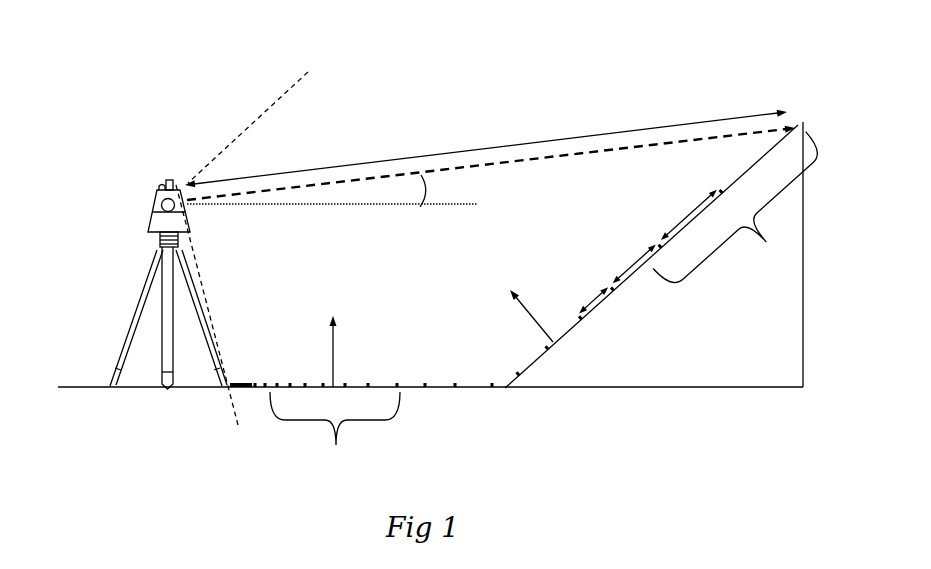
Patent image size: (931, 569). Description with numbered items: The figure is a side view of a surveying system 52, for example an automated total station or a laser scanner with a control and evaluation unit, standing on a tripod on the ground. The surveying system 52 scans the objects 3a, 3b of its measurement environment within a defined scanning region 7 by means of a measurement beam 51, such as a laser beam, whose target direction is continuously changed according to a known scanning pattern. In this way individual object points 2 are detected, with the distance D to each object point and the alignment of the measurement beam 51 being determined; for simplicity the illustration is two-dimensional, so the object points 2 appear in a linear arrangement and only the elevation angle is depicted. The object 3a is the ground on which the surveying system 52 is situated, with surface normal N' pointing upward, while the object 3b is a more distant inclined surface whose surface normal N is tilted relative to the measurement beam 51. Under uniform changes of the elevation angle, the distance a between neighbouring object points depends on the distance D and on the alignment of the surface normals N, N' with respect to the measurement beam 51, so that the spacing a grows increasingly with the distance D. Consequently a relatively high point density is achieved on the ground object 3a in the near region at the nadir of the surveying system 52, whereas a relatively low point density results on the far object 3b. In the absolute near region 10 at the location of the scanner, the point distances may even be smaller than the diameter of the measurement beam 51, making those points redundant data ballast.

The surveying system 52 is at (158, 162).
The scanning region 7 is at (346, 114).
The distance D is at (517, 142).
The measurement beam 51 is at (452, 170).
The surface normal N is at (515, 295).
The distance between object points a is at (697, 212).
The surface normal N' is at (297, 345).
The object points 2 is at (369, 384).
The absolute near region 10 is at (233, 396).
The object 3a is at (465, 388).
The object 3b is at (710, 380).